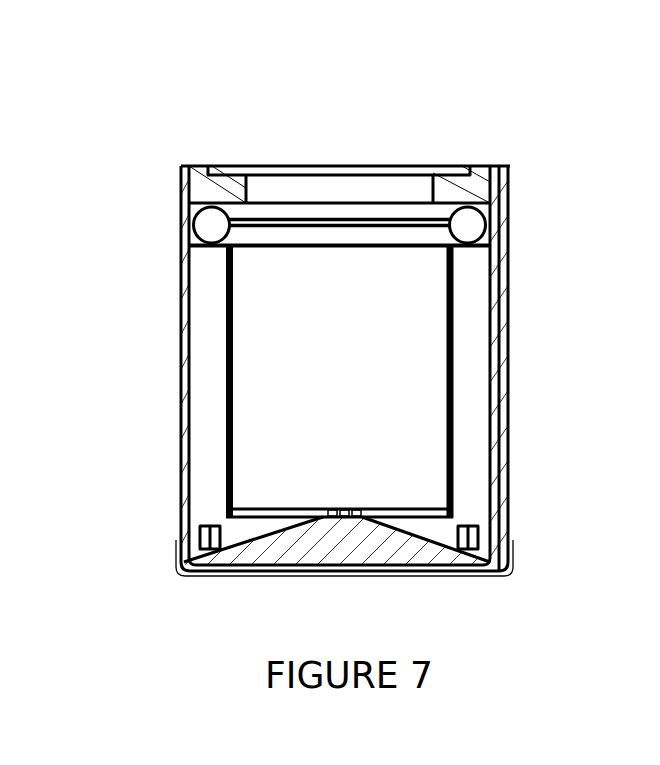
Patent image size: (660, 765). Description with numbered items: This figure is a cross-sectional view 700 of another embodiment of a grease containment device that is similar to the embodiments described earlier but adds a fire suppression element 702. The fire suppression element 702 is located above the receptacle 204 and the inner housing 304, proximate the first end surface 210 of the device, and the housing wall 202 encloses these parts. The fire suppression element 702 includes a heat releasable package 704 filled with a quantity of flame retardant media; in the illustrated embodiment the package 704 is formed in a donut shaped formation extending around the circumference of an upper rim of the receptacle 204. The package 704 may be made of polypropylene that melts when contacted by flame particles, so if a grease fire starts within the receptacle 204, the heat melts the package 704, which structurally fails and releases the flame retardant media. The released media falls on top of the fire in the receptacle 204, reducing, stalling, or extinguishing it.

The cross-sectional view 700 is at (553, 128).
The fire suppression element 702 is at (528, 212).
The heat releasable package 704 is at (190, 208).
The first end surface 210 is at (446, 162).
The housing wall 202 is at (179, 307).
The inner housing 304 is at (226, 403).
The receptacle 204 is at (226, 467).